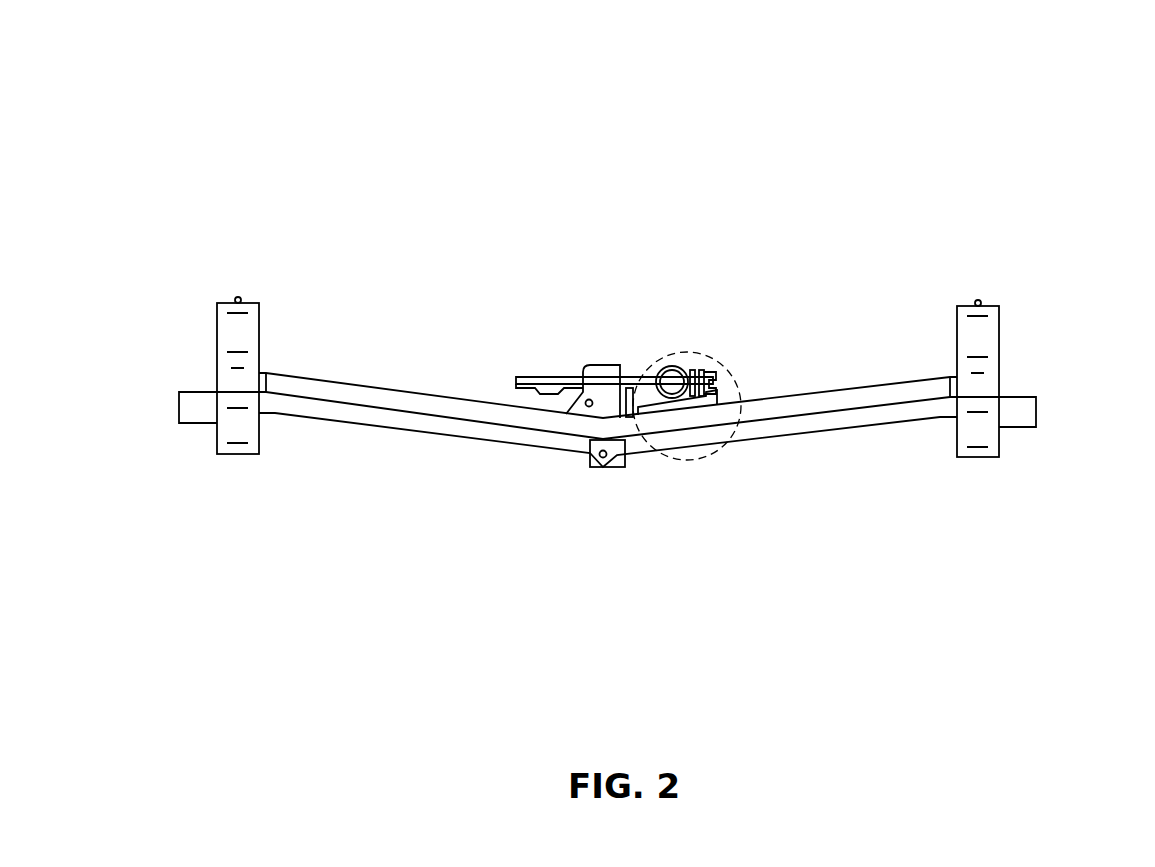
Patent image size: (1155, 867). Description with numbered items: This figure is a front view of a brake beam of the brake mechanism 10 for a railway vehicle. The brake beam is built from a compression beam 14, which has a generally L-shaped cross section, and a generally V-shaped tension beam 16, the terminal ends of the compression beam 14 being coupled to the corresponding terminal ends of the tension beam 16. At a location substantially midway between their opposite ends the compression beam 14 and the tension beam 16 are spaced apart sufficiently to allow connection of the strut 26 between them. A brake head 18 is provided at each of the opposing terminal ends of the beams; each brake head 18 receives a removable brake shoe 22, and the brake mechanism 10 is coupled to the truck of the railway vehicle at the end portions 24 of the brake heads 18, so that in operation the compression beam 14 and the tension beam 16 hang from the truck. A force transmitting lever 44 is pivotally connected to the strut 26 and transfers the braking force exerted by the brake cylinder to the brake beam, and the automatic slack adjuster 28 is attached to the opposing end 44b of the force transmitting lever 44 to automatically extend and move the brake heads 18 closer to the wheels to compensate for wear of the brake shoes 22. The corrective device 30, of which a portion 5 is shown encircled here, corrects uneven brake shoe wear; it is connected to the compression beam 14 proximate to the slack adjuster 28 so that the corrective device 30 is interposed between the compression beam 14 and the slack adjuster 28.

The brake mechanism 10 is at (607, 120).
The brake head 18 is at (212, 283).
The brake shoe 22 is at (238, 435).
The end portion 24 is at (187, 417).
The tension beam 16 is at (405, 397).
The compression beam 14 is at (403, 420).
The strut 26 is at (604, 365).
The force transmitting lever 44 is at (573, 380).
The opposing end of force transmitting lever 44b is at (660, 393).
The slack adjuster 28 is at (672, 365).
The corrective device 30 is at (720, 380).
The portion of corrective device 5 is at (699, 461).